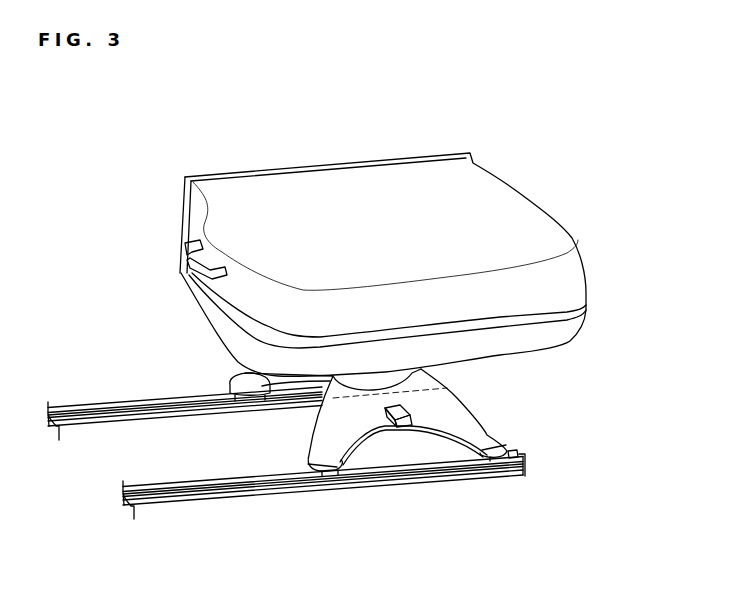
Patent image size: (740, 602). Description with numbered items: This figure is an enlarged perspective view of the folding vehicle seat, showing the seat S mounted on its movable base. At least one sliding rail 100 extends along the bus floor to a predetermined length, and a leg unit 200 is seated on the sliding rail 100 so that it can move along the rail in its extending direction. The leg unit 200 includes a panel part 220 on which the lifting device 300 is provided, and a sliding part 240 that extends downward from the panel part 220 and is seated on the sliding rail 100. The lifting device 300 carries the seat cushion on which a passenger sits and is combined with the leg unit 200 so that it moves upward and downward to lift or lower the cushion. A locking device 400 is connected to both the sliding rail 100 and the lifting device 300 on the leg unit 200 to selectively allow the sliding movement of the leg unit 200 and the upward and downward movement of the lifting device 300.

The seat S is at (530, 228).
The sliding rail 100 is at (130, 412).
The leg unit 200 is at (580, 363).
The panel part 220 is at (441, 380).
The sliding part 240 is at (488, 434).
The lifting device 300 is at (383, 372).
The locking device 400 is at (400, 412).